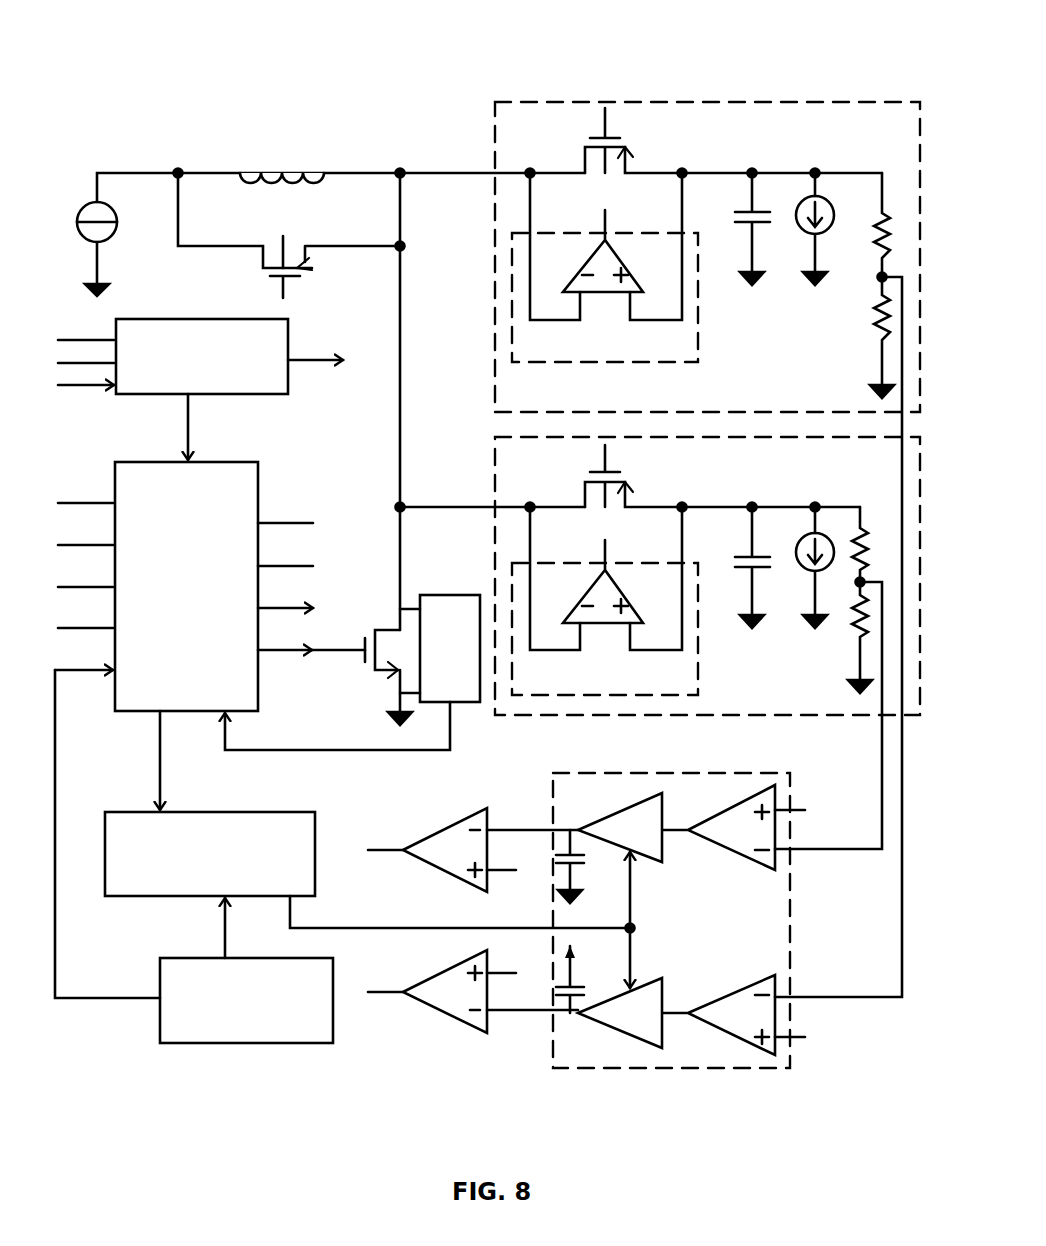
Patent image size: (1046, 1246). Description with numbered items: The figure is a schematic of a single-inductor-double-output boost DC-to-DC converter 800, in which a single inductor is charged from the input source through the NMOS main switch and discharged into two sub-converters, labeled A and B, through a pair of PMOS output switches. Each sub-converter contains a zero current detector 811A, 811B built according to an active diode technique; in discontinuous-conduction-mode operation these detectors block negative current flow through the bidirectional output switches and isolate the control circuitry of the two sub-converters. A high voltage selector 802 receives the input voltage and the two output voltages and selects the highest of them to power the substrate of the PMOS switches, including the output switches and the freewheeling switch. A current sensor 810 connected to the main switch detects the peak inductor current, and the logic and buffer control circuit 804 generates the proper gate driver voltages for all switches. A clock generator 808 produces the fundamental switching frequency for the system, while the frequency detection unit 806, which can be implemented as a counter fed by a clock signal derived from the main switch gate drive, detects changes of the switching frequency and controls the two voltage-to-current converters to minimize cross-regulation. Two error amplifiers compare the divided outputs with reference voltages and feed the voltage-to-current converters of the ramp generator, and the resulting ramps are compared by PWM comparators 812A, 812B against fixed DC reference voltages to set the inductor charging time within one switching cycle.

The single-inductor-double-output boost DC-to-DC converter 800 is at (474, 70).
The high voltage selector 802 is at (212, 319).
The logic and buffer control circuit 804 is at (176, 586).
The frequency detection unit 806 is at (148, 896).
The clock generator 808 is at (228, 1043).
The current sensor 810 is at (445, 595).
The zero current detector 811A is at (612, 297).
The zero current detector 811B is at (605, 615).
The PWM comparator A 812A is at (437, 1012).
The PWM comparator B 812B is at (437, 872).